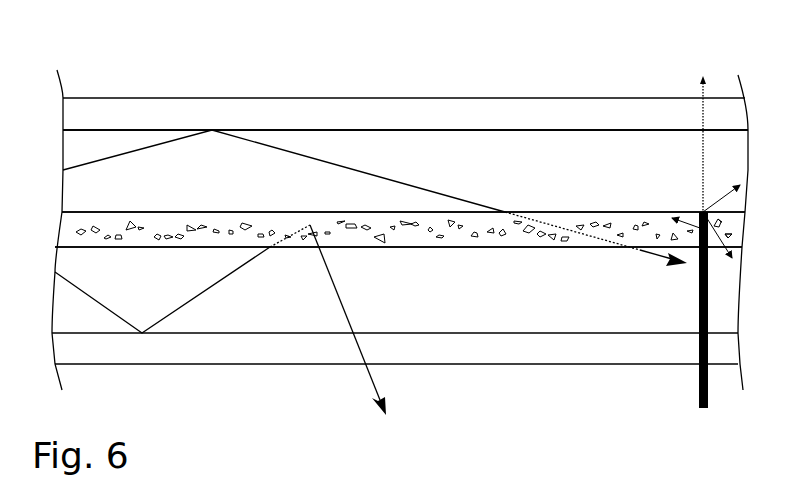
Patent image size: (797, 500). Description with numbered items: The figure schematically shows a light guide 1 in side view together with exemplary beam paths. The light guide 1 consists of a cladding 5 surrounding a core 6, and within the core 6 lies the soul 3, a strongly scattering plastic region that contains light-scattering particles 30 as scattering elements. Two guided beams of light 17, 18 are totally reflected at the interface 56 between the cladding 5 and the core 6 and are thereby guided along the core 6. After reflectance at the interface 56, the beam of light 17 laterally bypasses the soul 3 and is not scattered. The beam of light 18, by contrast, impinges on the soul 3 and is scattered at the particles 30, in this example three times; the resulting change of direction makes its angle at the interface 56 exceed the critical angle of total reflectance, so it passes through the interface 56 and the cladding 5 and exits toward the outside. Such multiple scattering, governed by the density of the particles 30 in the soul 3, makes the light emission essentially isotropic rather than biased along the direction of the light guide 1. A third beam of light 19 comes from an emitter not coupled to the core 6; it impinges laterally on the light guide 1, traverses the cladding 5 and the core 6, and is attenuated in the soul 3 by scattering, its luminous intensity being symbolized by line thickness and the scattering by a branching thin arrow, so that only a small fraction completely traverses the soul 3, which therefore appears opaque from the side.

The light guide 1 is at (128, 56).
The soul 3 is at (598, 212).
The cladding 5 is at (368, 112).
The core 6 is at (543, 165).
The beam of light 17 is at (312, 158).
The beam of light 18 is at (333, 290).
The beam of light 19 is at (700, 347).
The particles 30 is at (482, 248).
The interface 56 is at (436, 128).